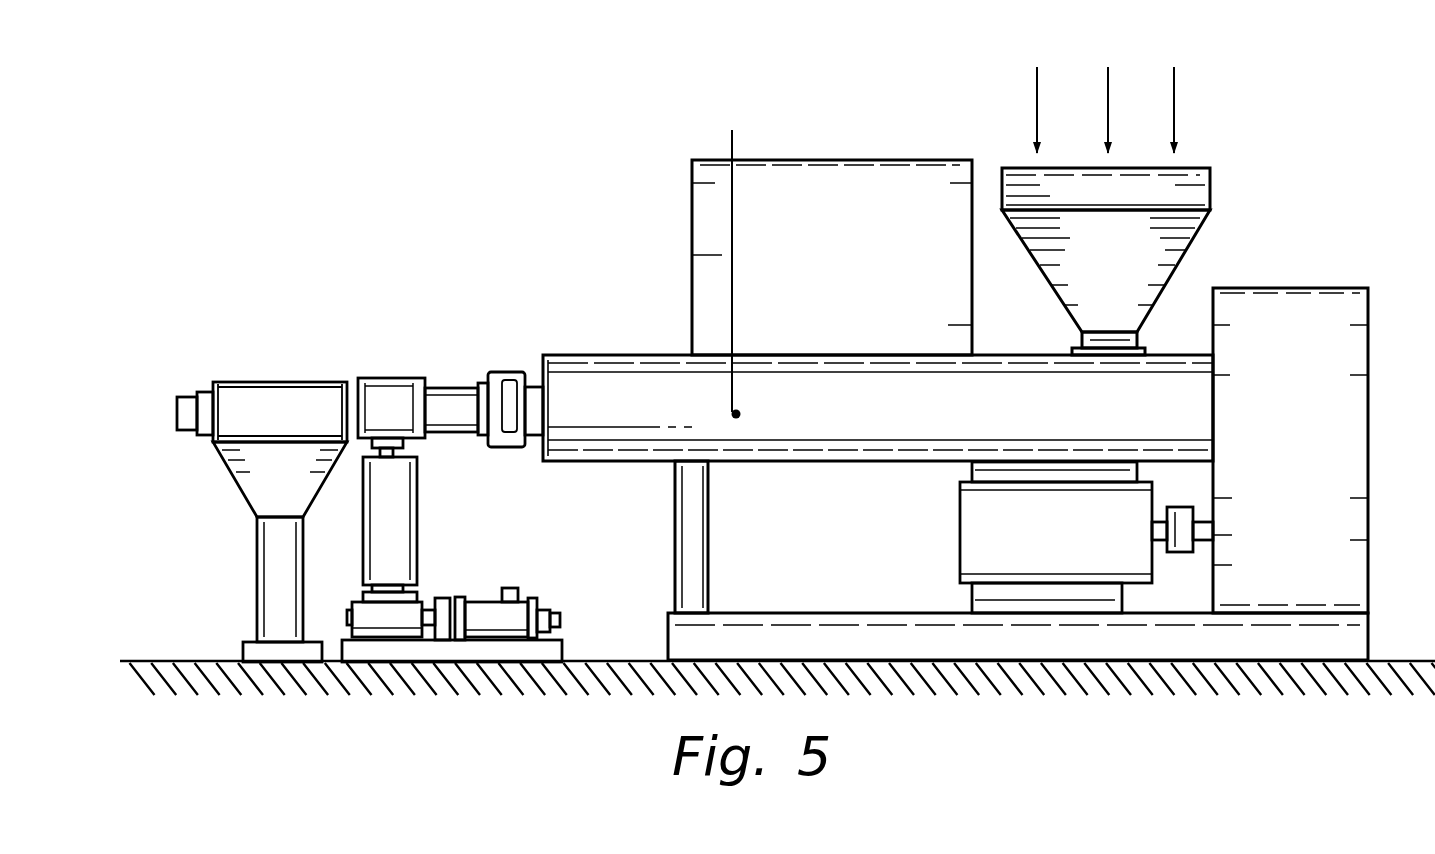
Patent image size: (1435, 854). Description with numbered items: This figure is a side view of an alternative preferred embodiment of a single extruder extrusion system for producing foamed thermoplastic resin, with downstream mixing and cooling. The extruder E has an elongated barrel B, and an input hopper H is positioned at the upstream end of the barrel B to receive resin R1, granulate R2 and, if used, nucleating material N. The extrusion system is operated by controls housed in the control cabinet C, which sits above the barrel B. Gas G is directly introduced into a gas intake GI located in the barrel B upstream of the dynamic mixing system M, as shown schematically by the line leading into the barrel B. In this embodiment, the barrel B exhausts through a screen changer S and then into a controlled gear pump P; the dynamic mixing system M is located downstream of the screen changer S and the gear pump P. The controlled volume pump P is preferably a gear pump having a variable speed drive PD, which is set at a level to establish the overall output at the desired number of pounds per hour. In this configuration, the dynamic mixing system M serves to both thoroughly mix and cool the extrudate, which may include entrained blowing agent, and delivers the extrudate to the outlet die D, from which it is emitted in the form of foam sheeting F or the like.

The foam sheeting F is at (167, 412).
The extrusion die D is at (203, 387).
The dynamic mixing system M is at (274, 394).
The controlled gear pump P is at (395, 382).
The variable speed drive PD is at (419, 558).
The screen changer S is at (505, 367).
The gas G is at (728, 252).
The gas intake GI is at (736, 418).
The control cabinet C is at (832, 182).
The elongated barrel B is at (877, 452).
The input hopper H is at (1198, 197).
The resin R1 is at (1037, 92).
The granulate R2 is at (1110, 92).
The nucleating material N is at (1169, 92).
The extruder E is at (1290, 303).